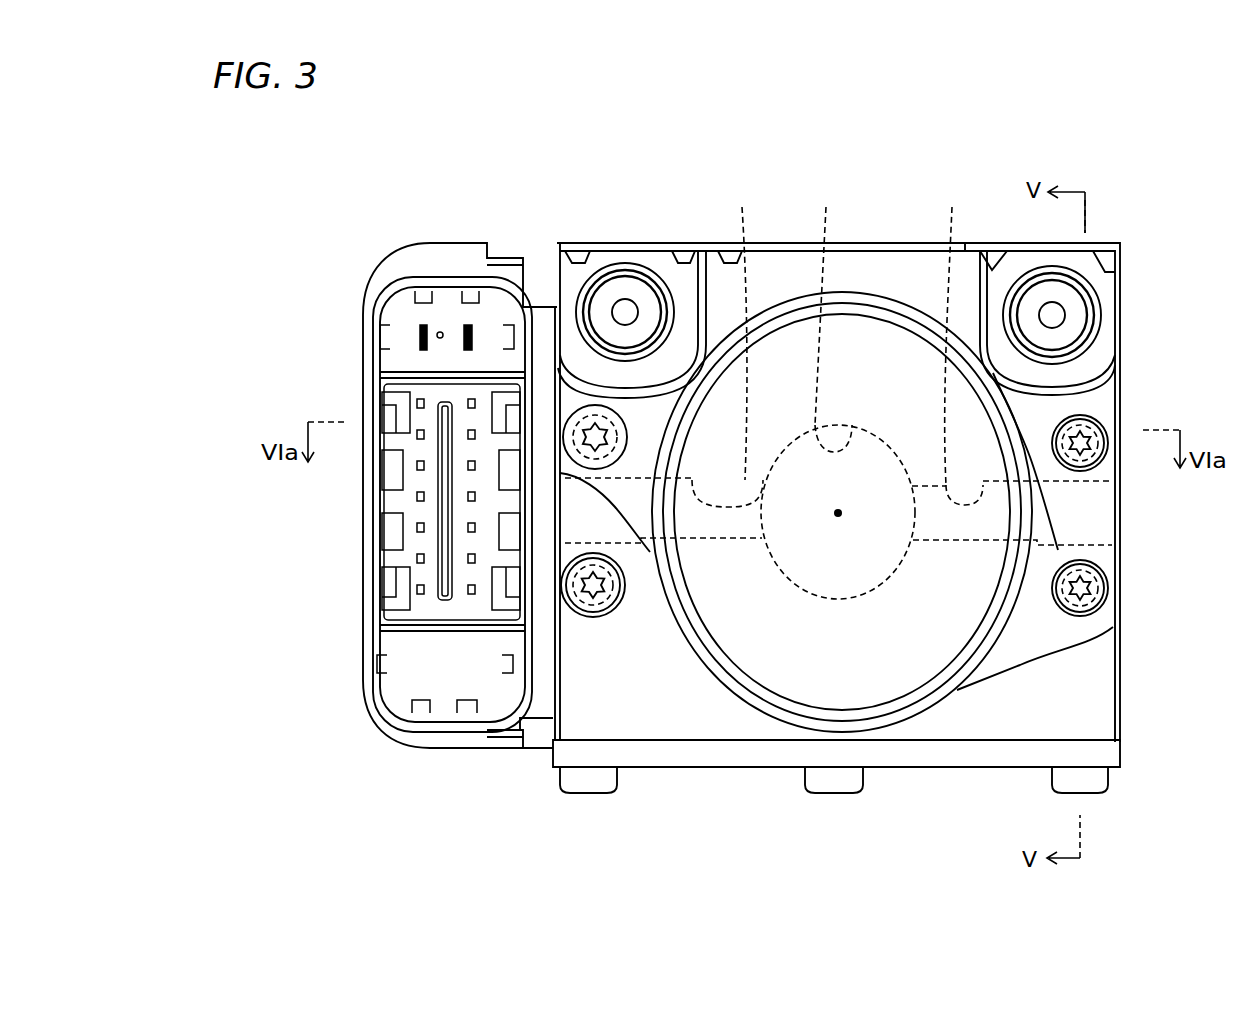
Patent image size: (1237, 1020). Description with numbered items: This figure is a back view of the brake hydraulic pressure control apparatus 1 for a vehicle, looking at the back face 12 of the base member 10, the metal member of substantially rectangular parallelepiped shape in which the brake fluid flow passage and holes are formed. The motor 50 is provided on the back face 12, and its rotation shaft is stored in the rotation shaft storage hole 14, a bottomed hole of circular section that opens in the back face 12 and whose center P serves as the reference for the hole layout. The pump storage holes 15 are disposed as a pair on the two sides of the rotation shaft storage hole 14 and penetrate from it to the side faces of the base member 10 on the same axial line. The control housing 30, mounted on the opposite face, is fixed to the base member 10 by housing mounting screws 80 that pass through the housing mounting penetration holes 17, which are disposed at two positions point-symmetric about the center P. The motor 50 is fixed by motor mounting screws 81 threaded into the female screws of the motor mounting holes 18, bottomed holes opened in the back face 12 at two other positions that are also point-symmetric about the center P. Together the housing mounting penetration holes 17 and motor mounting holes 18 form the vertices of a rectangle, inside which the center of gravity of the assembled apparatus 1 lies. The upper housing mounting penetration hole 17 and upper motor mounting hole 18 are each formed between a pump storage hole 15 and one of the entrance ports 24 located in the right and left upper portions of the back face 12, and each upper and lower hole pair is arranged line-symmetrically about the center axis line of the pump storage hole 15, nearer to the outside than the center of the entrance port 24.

The brake hydraulic pressure control apparatus 1 is at (790, 193).
The base member 10 is at (884, 287).
The back face 12 is at (1053, 713).
The rotation shaft storage hole 14 is at (833, 316).
The pump storage holes 15 is at (838, 362).
The housing mounting penetration hole 17 is at (592, 623).
The motor mounting hole 18 is at (627, 440).
The entrance ports 24 is at (622, 283).
The control housing 30 is at (462, 247).
The motor 50 is at (790, 638).
The housing mounting screw 80 is at (578, 592).
The motor mounting screw 81 is at (586, 437).
The center of the rotation shaft storage hole P is at (840, 515).